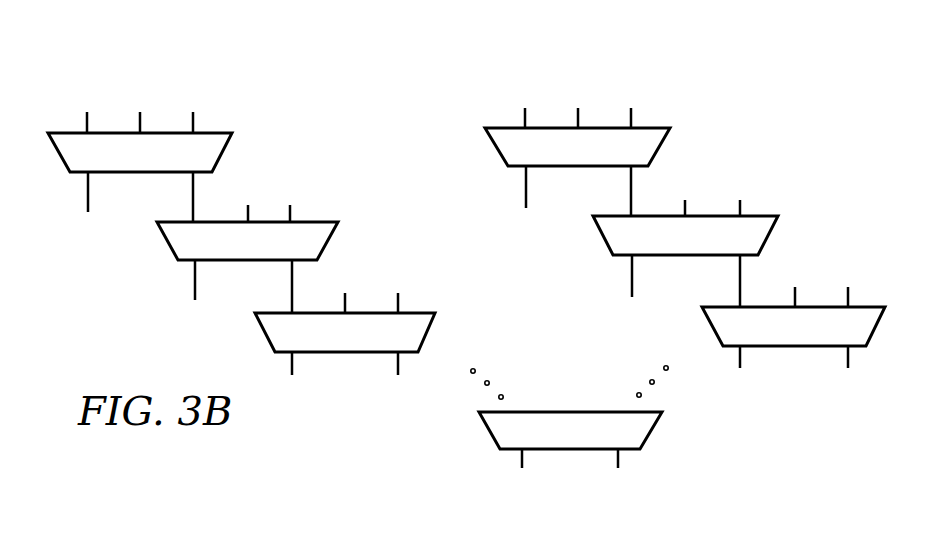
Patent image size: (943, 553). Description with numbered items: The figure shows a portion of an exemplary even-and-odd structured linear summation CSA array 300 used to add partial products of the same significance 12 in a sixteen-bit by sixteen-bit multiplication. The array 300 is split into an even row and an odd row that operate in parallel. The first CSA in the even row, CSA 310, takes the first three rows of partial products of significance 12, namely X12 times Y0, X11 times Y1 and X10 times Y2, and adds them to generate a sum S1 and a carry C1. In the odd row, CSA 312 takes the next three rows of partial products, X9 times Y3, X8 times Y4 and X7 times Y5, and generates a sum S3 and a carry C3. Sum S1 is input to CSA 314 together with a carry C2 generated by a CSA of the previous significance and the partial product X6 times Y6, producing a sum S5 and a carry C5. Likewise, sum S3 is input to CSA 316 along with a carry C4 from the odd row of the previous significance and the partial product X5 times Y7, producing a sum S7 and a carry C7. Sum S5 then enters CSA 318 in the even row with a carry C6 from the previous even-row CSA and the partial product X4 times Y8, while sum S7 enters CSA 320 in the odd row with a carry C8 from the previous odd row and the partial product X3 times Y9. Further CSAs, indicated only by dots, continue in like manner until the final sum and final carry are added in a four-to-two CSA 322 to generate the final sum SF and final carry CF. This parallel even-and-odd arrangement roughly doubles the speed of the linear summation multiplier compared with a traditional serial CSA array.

The significance 12 is at (791, 80).
The CSA array 300 is at (731, 448).
The first CSA in the even row 310 is at (56, 156).
The CSA in the odd row 312 is at (494, 148).
The CSA 314 is at (166, 244).
The CSA 316 is at (600, 236).
The CSA in the even row 318 is at (263, 332).
The CSA in the odd row 320 is at (708, 322).
The 4:2 CSA 322 is at (487, 430).